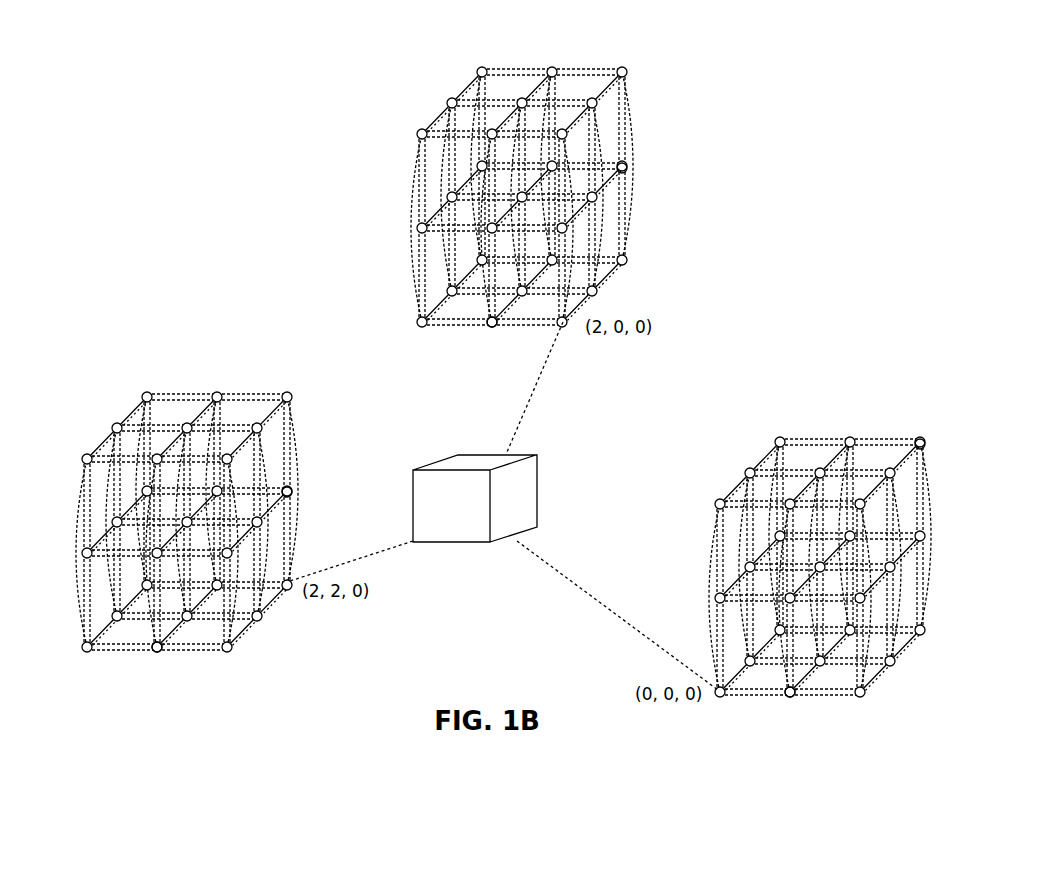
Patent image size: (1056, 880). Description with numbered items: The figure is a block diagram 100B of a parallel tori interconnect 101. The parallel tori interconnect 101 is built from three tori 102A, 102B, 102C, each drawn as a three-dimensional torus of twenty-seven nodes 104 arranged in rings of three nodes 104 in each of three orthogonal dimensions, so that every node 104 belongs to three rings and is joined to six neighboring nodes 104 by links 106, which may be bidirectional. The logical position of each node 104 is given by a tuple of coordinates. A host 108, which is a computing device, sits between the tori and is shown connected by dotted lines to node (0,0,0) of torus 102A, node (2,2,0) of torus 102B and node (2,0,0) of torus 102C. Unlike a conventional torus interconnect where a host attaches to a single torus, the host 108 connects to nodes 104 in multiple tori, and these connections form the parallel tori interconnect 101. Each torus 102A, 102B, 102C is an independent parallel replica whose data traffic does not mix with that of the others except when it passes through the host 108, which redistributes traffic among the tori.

The block diagram 100B is at (1022, 49).
The parallel tori interconnect 101 is at (184, 161).
The torus 102A is at (813, 417).
The torus 102B is at (178, 372).
The torus 102C is at (532, 63).
The node 104 is at (626, 166).
The link 106 is at (493, 329).
The host 108 is at (475, 498).